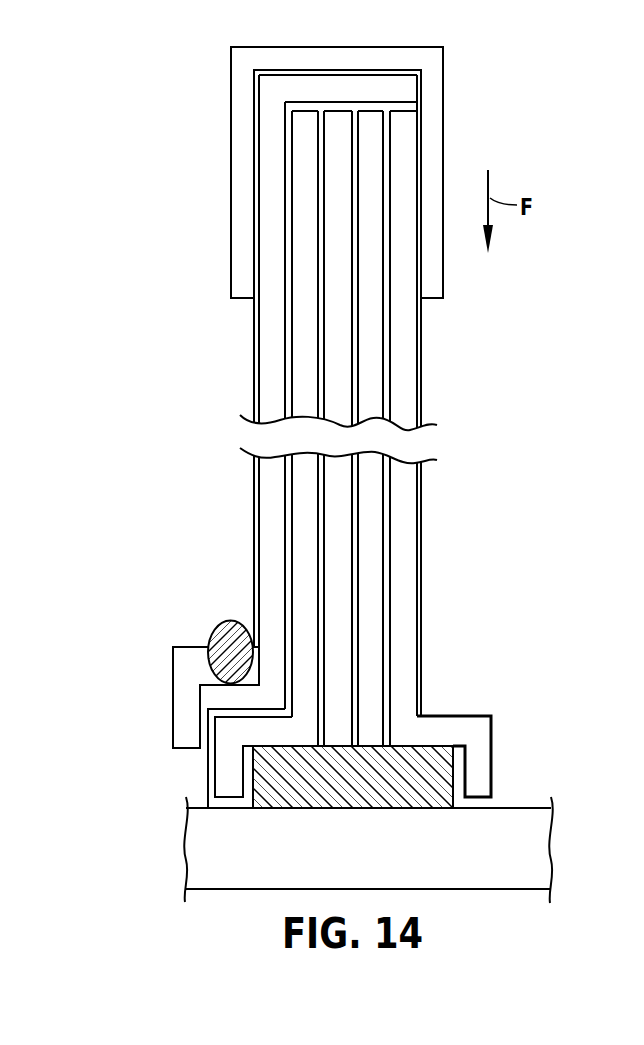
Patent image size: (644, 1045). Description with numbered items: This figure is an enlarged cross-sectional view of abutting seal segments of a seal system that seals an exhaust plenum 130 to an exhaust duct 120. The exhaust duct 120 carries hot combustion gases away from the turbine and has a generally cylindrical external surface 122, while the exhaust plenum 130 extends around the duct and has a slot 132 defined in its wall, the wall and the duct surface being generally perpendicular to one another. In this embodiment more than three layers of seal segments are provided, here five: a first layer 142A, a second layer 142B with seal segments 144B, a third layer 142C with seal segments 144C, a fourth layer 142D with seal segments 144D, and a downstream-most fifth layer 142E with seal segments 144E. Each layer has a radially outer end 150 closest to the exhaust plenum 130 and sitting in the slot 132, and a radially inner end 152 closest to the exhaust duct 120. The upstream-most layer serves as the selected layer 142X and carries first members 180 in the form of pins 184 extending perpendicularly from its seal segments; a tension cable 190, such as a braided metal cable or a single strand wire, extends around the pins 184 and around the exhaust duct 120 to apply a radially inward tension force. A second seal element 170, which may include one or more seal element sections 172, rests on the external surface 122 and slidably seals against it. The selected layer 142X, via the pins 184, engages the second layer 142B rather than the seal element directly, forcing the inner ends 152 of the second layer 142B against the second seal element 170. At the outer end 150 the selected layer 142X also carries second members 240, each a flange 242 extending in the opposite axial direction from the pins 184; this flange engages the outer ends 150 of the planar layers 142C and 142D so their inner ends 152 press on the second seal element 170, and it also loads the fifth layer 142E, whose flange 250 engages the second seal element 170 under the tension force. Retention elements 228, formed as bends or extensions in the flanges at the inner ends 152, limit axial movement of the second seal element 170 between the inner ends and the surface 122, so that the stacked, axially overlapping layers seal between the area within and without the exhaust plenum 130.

The exhaust duct 120 is at (452, 886).
The external surface 122 is at (515, 807).
The exhaust plenum 130 is at (445, 72).
The slot 132 is at (418, 175).
The first layer 142A is at (191, 409).
The selected layer 142X is at (273, 343).
The second layer 142B is at (215, 428).
The seal segments 144B is at (310, 378).
The third layer 142C is at (468, 428).
The seal segments 144C is at (340, 295).
The fourth layer 142D is at (474, 428).
The seal segments 144D is at (370, 333).
The fifth layer 142E is at (491, 387).
The seal segments 144E is at (400, 385).
The outer end 150 is at (278, 183).
The inner end 152 is at (303, 672).
The second seal element 170 is at (279, 803).
The seal element section 172 is at (342, 792).
The first member 180 is at (151, 687).
The pin 184 is at (185, 697).
The tension cable 190 is at (217, 623).
The retention element 228 is at (230, 790).
The second member 240 is at (444, 69).
The flange 242 is at (372, 92).
The flange 250 is at (442, 727).